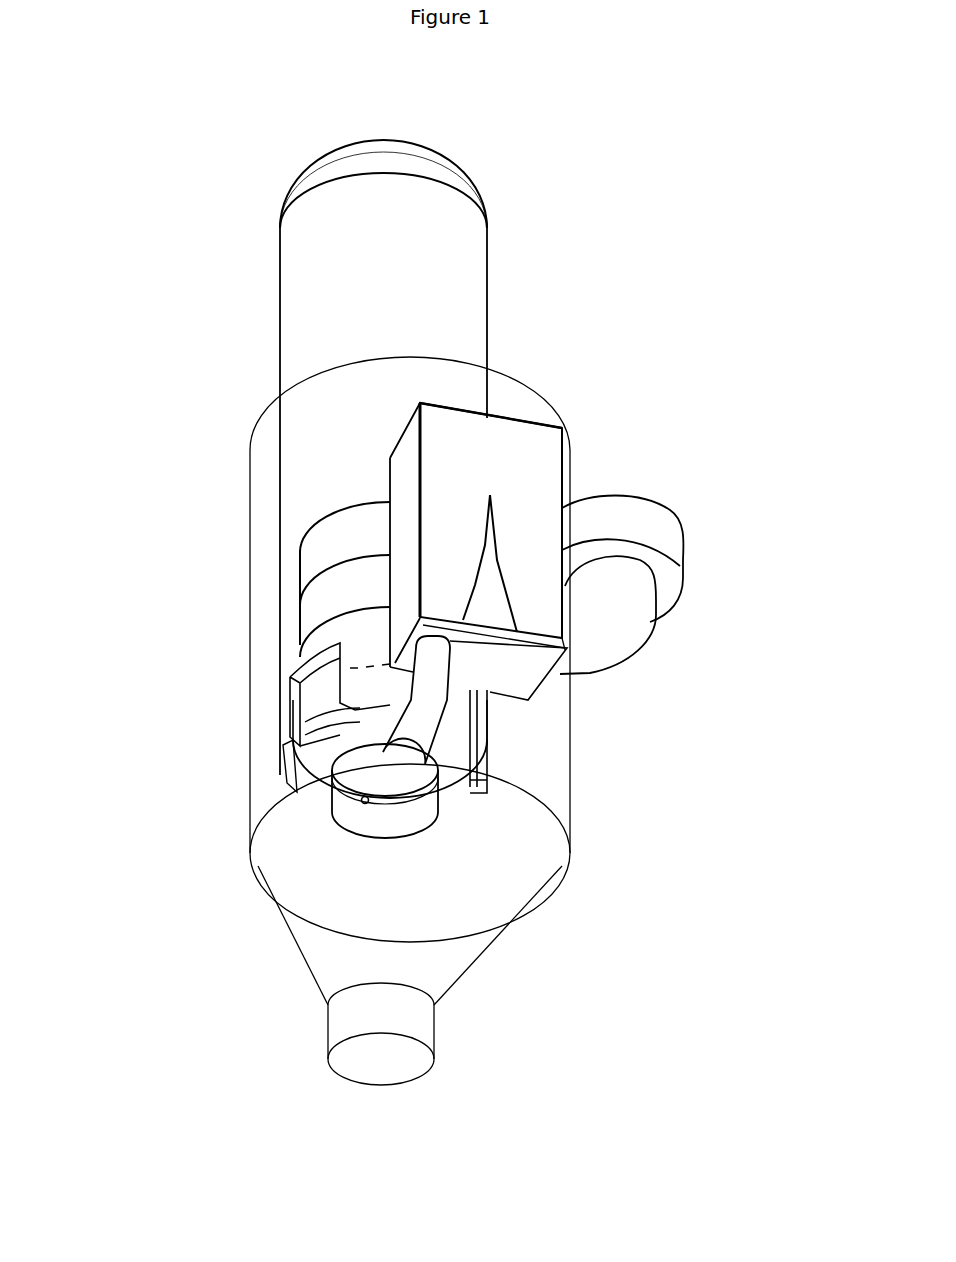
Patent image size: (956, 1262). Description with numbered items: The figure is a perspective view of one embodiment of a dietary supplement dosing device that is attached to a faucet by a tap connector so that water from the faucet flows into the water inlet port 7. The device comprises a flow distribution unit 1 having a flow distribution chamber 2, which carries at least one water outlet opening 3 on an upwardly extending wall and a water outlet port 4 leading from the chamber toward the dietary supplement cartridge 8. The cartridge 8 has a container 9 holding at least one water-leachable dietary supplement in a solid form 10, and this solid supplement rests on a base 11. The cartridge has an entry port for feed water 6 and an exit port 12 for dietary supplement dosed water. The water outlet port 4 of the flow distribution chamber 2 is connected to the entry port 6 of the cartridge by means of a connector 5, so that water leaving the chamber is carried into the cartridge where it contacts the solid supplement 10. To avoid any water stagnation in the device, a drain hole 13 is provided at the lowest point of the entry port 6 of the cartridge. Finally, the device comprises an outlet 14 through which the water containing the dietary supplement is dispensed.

The flow distribution unit 1 is at (573, 428).
The flow distribution chamber 2 is at (543, 487).
The water outlet opening 3 is at (513, 573).
The water outlet port 4 is at (460, 647).
The connector 5 is at (434, 699).
The entry port for feed water 6 is at (349, 744).
The water inlet port 7 is at (630, 637).
The dietary supplement cartridge 8 is at (240, 250).
The container 9 is at (300, 363).
The water-leachable dietary supplement in a solid form 10 is at (303, 563).
The base 11 is at (312, 715).
The exit port 12 is at (320, 692).
The drain hole 13 is at (347, 804).
The outlet 14 is at (447, 1022).